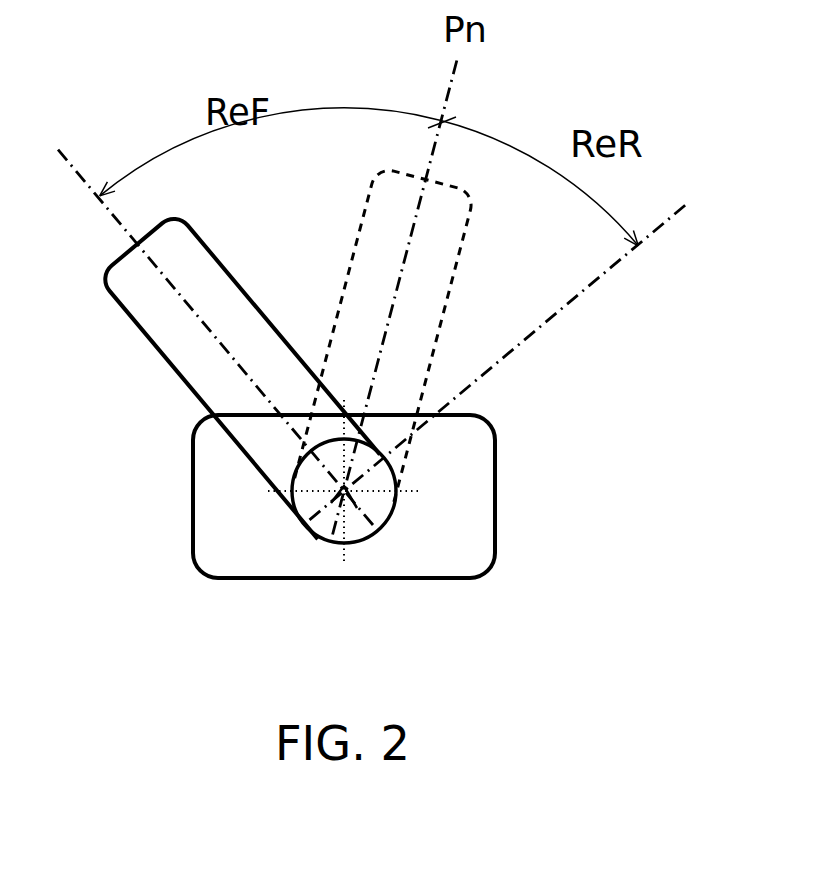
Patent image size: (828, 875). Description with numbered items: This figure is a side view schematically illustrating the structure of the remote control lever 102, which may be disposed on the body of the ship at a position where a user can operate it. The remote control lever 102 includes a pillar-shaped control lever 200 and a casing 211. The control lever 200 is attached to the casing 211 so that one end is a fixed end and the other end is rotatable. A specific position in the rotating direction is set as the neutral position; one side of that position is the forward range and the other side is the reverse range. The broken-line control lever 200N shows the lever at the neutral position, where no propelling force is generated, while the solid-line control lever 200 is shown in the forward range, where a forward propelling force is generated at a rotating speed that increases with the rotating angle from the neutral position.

The remote control lever 102 is at (362, 492).
The control lever 200 is at (143, 337).
The control lever at neutral position 200N is at (472, 234).
The casing 211 is at (191, 538).